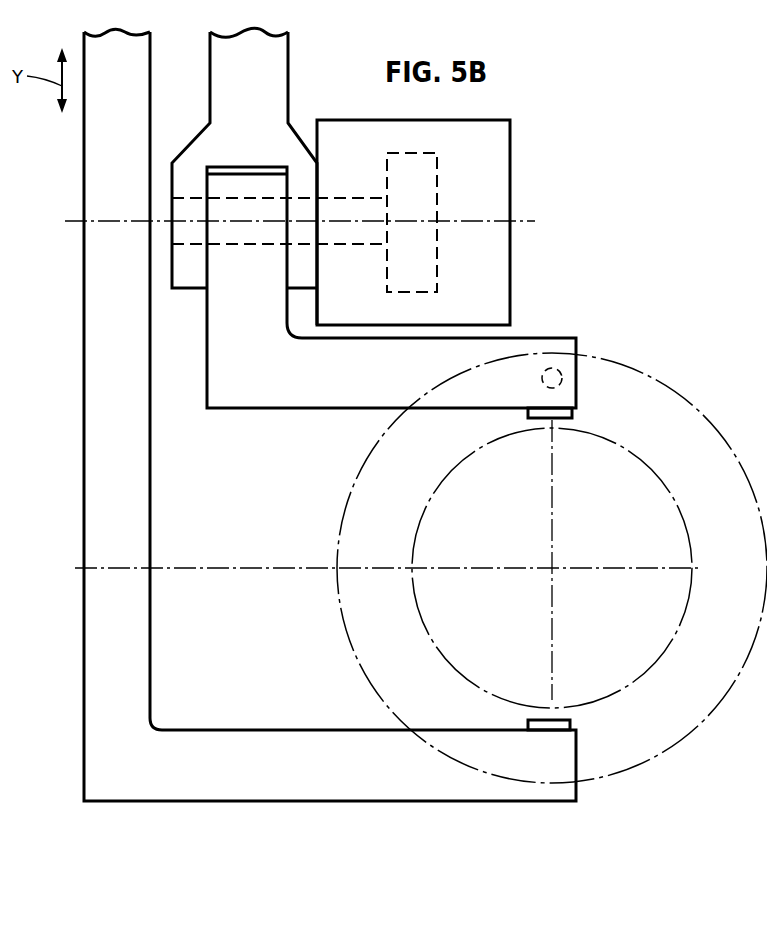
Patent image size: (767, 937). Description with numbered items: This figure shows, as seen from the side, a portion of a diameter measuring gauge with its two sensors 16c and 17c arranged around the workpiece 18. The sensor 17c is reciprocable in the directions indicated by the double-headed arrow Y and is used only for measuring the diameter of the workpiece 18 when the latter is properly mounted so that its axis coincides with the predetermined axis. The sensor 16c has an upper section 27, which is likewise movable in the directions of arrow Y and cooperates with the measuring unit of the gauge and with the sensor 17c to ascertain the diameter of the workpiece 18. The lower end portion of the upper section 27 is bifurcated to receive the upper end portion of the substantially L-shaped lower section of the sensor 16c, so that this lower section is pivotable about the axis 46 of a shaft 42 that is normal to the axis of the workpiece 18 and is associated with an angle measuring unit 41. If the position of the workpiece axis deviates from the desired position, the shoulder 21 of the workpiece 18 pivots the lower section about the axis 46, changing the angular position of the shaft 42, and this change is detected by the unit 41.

The sensor 16c is at (298, 388).
The sensor 17c is at (218, 745).
The workpiece 18 is at (433, 545).
The shoulder 21 is at (360, 605).
The upper section 27 is at (275, 60).
The angle measuring unit 41 is at (422, 198).
The shaft 42 is at (190, 232).
The axis 46 is at (522, 221).